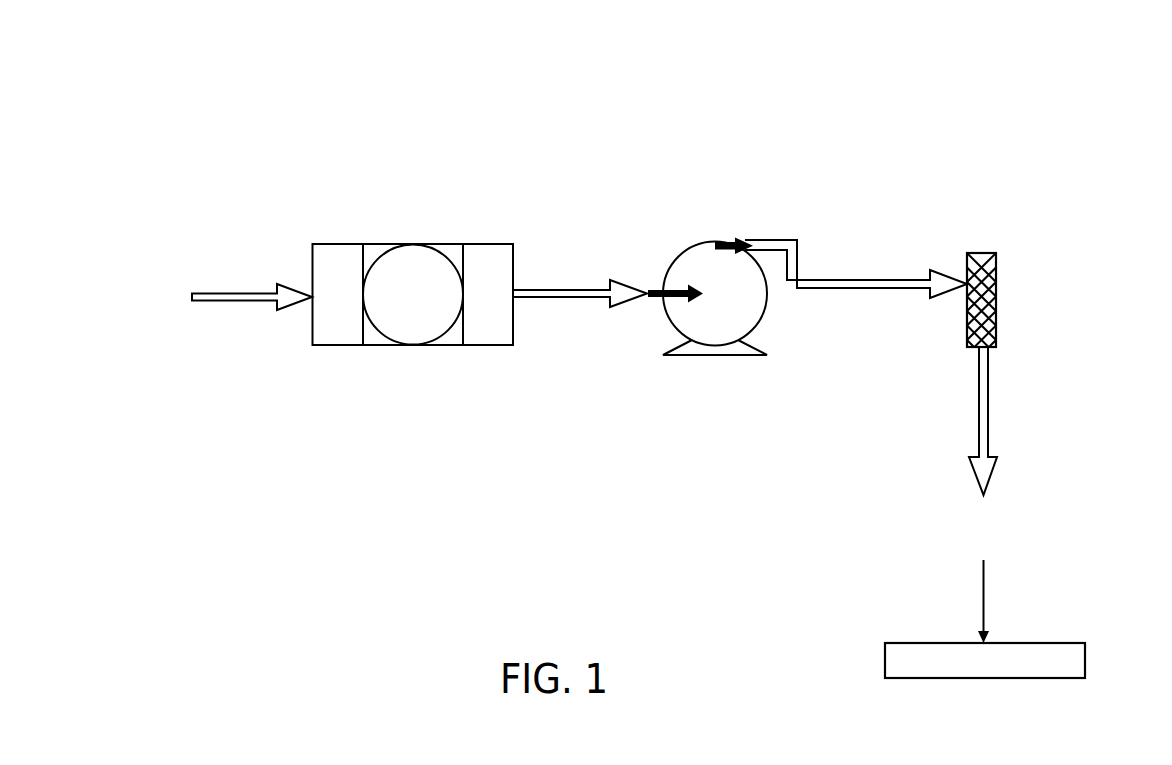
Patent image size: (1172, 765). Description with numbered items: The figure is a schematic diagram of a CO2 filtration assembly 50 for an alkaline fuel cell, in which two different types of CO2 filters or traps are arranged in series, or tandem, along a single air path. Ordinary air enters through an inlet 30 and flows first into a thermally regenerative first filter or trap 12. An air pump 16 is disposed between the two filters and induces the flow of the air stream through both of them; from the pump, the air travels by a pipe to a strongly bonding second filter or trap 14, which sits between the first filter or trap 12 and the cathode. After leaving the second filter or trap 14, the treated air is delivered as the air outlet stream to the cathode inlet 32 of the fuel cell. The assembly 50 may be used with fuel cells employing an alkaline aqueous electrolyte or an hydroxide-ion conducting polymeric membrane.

The CO2 filtration assembly 50 is at (163, 111).
The inlet 30 is at (118, 282).
The first filter or trap 12 is at (489, 331).
The air pump 16 is at (713, 357).
The second filter or trap 14 is at (981, 252).
The cathode inlet 32 is at (1085, 661).